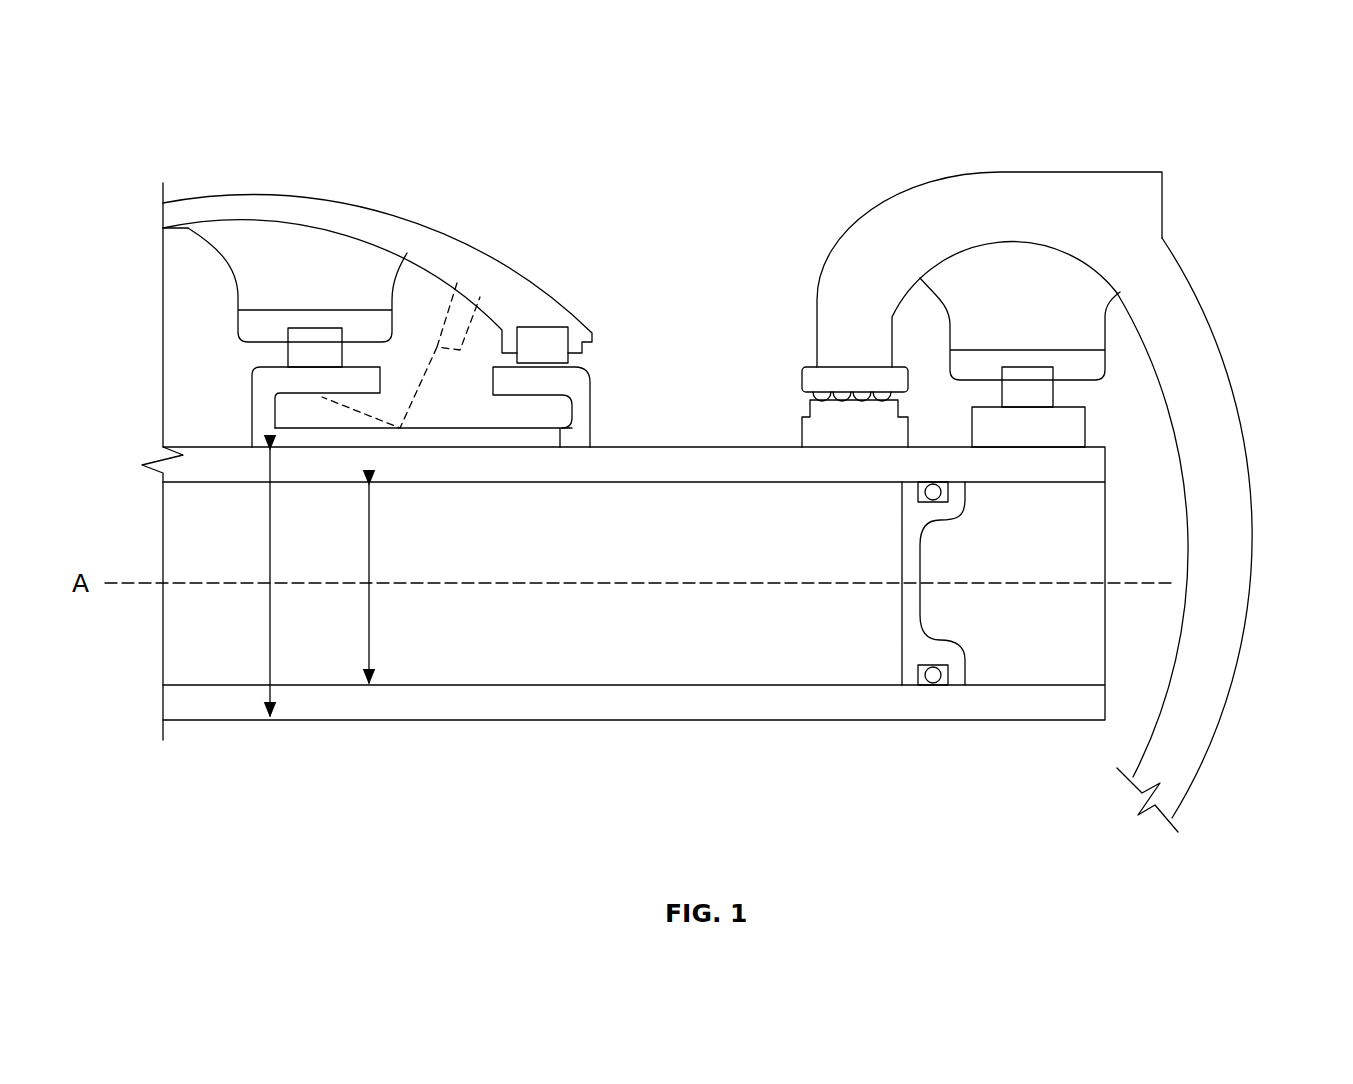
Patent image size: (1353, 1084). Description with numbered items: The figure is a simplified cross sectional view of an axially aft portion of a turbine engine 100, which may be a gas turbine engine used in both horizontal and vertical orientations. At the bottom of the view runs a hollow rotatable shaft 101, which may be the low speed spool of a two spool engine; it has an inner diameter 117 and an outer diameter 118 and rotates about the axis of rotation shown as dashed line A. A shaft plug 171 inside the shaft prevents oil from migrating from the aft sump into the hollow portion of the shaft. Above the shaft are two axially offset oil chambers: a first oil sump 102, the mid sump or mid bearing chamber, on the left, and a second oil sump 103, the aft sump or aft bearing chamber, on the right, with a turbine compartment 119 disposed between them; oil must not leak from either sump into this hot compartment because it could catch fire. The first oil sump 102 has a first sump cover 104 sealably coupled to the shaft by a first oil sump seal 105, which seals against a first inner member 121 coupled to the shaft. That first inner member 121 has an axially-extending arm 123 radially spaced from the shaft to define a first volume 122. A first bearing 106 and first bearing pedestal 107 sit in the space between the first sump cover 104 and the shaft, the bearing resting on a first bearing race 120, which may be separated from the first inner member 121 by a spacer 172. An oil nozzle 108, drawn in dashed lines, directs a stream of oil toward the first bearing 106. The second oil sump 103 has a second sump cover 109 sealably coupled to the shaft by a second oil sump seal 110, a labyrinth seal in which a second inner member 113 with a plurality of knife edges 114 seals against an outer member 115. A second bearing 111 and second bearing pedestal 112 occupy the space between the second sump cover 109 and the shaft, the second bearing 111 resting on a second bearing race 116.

The turbine engine 100 is at (178, 118).
The hollow rotatable shaft 101 is at (940, 710).
The first oil sump 102 is at (197, 258).
The second oil sump 103 is at (1130, 385).
The first sump cover 104 is at (350, 215).
The first oil sump seal 105 is at (540, 337).
The first bearing 106 is at (316, 342).
The first bearing pedestal 107 is at (257, 242).
The oil nozzle 108 is at (465, 290).
The second sump cover 109 is at (1240, 470).
The second oil sump seal 110 is at (795, 383).
The second bearing 111 is at (1030, 380).
The second bearing pedestal 112 is at (1005, 278).
The second inner member 113 is at (855, 419).
The knife edges 114 is at (905, 403).
The outer member 115 is at (805, 375).
The second bearing race 116 is at (1075, 422).
The inner diameter 117 is at (369, 542).
The outer diameter 118 is at (270, 605).
The turbine compartment 119 is at (699, 232).
The first bearing race 120 is at (262, 400).
The first inner member 121 is at (570, 386).
The first volume 122 is at (528, 402).
The axially-extending arm 123 is at (512, 380).
The shaft plug 171 is at (915, 605).
The spacer 172 is at (440, 437).